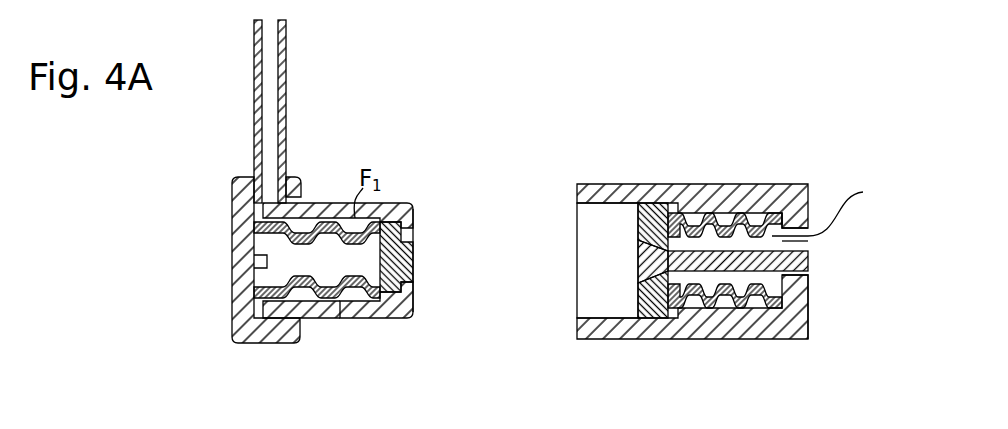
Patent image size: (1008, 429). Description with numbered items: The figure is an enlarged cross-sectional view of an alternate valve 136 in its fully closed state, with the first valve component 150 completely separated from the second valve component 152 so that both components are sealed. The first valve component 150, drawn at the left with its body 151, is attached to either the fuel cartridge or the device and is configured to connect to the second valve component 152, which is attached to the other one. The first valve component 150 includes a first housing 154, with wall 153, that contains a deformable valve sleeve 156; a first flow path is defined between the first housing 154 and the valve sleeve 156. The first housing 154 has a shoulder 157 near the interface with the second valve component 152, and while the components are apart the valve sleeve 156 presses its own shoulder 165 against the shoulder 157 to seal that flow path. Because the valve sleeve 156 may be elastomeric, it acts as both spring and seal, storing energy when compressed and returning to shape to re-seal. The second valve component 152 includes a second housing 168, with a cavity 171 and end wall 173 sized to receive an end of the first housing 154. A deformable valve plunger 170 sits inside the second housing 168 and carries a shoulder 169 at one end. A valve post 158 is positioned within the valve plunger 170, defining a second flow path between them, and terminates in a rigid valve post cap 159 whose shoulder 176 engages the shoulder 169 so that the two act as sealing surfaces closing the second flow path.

The valve 136 is at (628, 67).
The first valve component 150 is at (212, 345).
The connector body 151 is at (222, 222).
The second valve component 152 is at (814, 353).
The housing wall 153 is at (398, 330).
The first housing 154 is at (320, 322).
The valve sleeve 156 is at (327, 222).
The shoulder 157 is at (405, 205).
The valve post 158 is at (808, 261).
The valve post cap 159 is at (638, 262).
The shoulder 165 is at (413, 245).
The second housing 168 is at (693, 340).
The shoulder 169 is at (640, 280).
The valve plunger 170 is at (771, 200).
The cavity 171 is at (609, 222).
The end wall 173 is at (815, 319).
The shoulder 176 is at (650, 213).